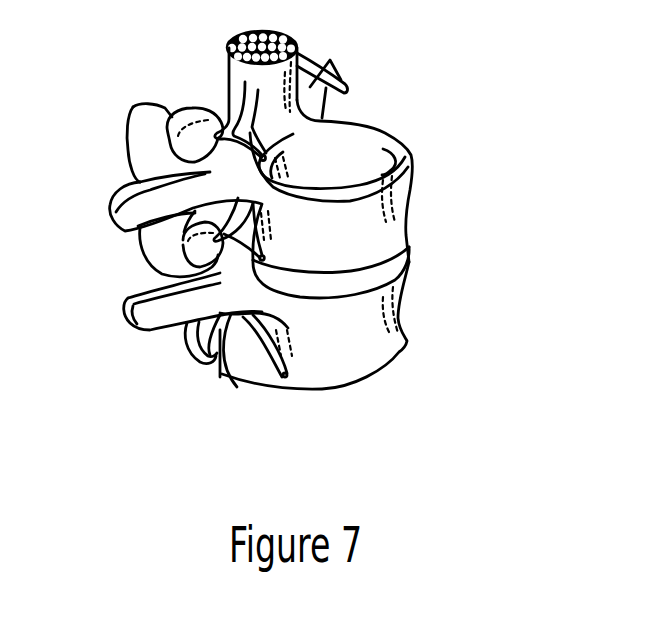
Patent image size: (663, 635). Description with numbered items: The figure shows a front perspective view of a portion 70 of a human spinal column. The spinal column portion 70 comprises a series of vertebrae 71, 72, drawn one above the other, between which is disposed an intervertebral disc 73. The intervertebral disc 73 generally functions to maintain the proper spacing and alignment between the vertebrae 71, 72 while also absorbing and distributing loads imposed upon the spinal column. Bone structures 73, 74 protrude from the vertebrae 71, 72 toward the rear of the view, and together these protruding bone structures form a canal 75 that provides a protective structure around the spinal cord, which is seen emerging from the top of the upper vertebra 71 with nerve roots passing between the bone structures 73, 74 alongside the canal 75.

The spinal column portion 70 is at (493, 163).
The vertebra 71 is at (409, 167).
The vertebra 72 is at (407, 348).
The intervertebral disc 73 is at (393, 268).
The bone structure 74 is at (143, 324).
The canal 75 is at (192, 353).